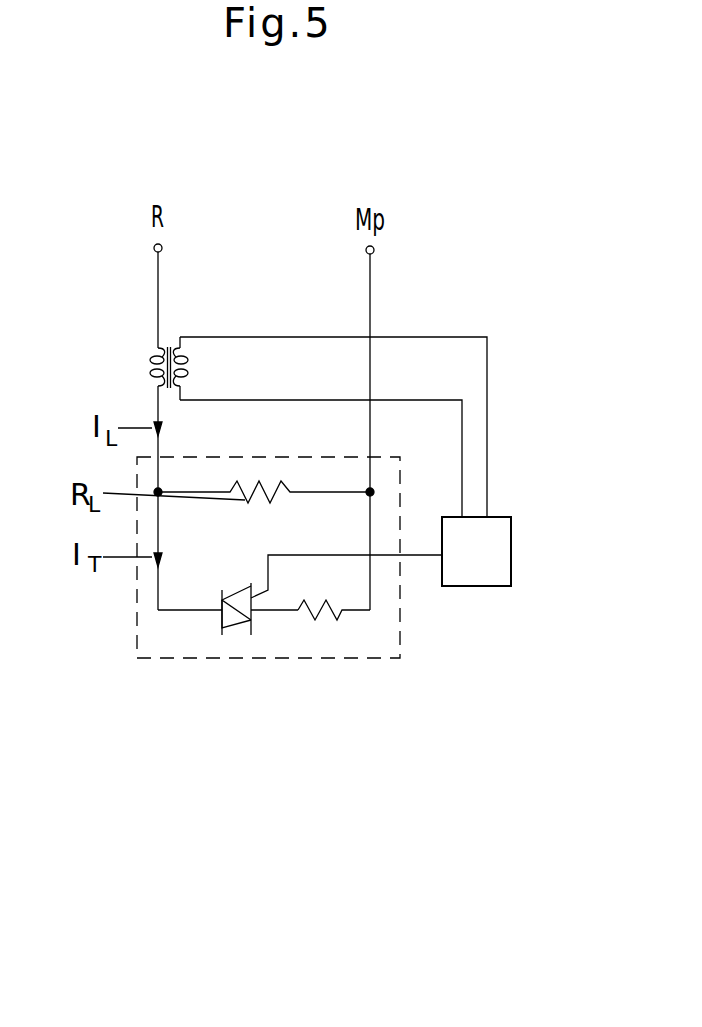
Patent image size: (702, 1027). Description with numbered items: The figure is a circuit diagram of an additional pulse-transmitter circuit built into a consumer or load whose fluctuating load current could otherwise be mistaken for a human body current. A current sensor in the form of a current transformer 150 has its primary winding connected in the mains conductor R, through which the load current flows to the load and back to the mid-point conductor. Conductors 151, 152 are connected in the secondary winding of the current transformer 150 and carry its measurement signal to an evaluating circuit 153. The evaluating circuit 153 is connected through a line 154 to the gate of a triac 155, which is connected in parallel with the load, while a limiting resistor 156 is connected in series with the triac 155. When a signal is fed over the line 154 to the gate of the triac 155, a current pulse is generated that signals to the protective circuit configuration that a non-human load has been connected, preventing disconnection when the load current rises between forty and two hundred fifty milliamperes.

The current transformer 150 is at (155, 372).
The conductor 151 is at (487, 375).
The conductor 152 is at (462, 433).
The evaluating circuit 153 is at (480, 551).
The line 154 is at (415, 557).
The triac 155 is at (233, 632).
The limiting resistor 156 is at (318, 618).